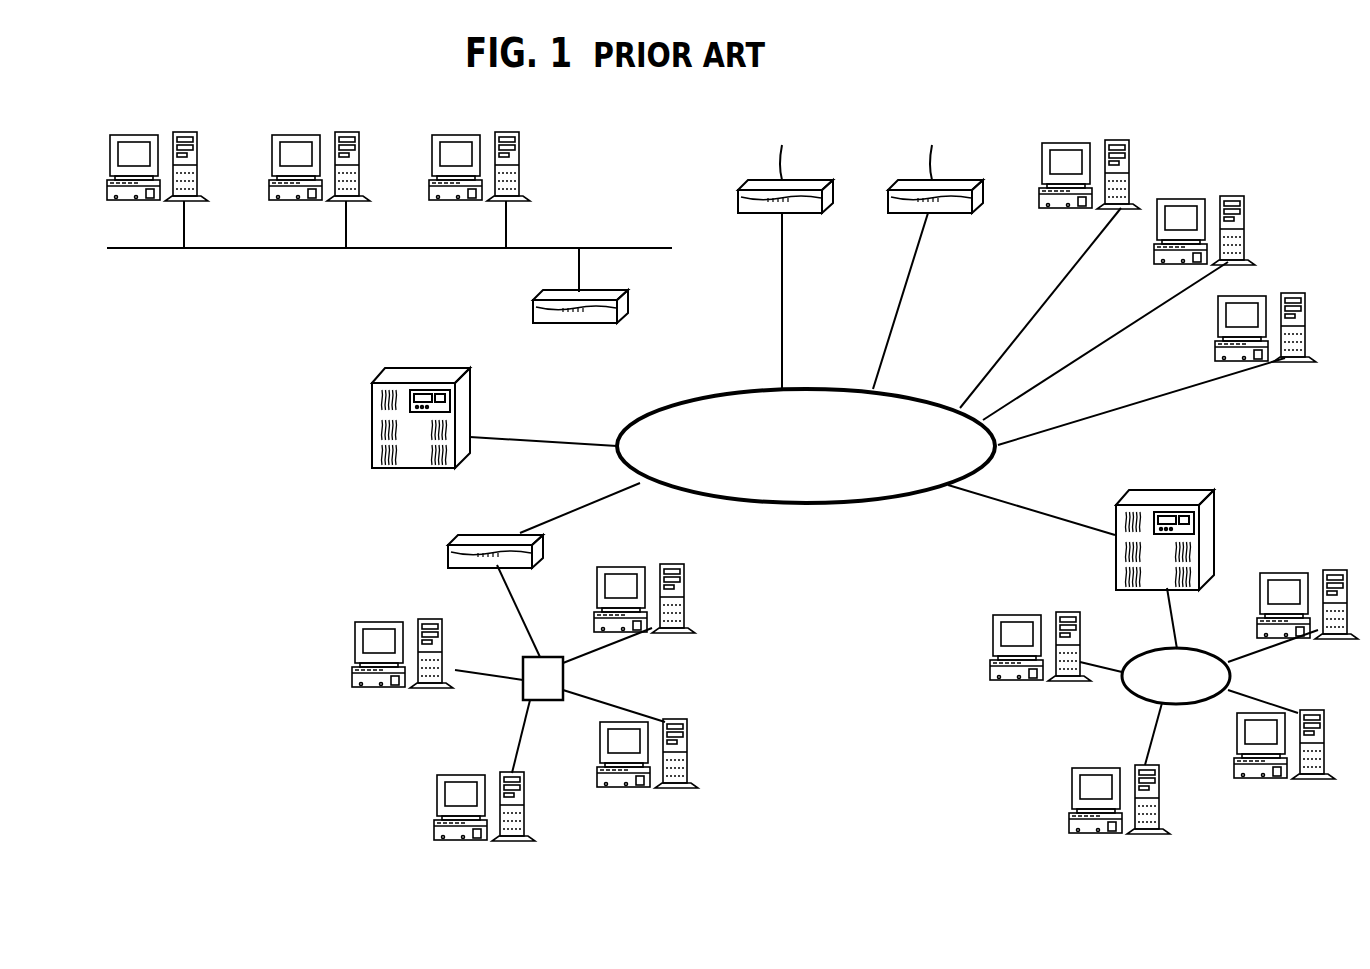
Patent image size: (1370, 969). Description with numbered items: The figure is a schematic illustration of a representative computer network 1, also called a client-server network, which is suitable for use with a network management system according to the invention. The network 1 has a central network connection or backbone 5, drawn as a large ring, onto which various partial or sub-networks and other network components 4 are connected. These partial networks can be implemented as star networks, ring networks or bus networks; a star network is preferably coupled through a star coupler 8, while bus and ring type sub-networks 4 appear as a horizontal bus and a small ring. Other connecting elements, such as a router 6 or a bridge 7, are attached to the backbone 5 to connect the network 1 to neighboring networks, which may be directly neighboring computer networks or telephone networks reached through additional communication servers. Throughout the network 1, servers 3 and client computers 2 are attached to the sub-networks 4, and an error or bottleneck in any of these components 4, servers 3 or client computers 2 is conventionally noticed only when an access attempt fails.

The computer network 1 is at (1158, 112).
The client computer 2 is at (178, 132).
The server 3 is at (372, 435).
The network component 4 is at (619, 247).
The backbone 5 is at (893, 501).
The router 6 is at (982, 190).
The bridge 7 is at (448, 540).
The star coupler 8 is at (522, 688).